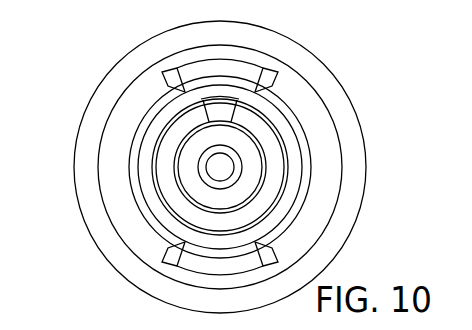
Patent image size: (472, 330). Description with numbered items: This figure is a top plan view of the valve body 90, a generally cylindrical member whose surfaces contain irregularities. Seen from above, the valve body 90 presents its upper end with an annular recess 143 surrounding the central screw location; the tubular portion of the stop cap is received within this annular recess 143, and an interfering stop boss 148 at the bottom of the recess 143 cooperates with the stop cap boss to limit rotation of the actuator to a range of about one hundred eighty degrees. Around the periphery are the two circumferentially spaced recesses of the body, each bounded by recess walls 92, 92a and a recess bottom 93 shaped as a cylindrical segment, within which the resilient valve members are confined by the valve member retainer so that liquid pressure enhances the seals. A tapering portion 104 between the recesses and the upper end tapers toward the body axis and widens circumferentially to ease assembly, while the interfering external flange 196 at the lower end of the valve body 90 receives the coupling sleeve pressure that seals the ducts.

The valve body 90 is at (94, 59).
The recess wall 92 is at (163, 77).
The recess wall 92a is at (277, 81).
The recess bottom 93 is at (132, 197).
The tapering portion 104 is at (132, 142).
The annular recess 143 is at (268, 131).
The interfering stop boss 148 is at (262, 91).
The external flange 196 is at (366, 141).